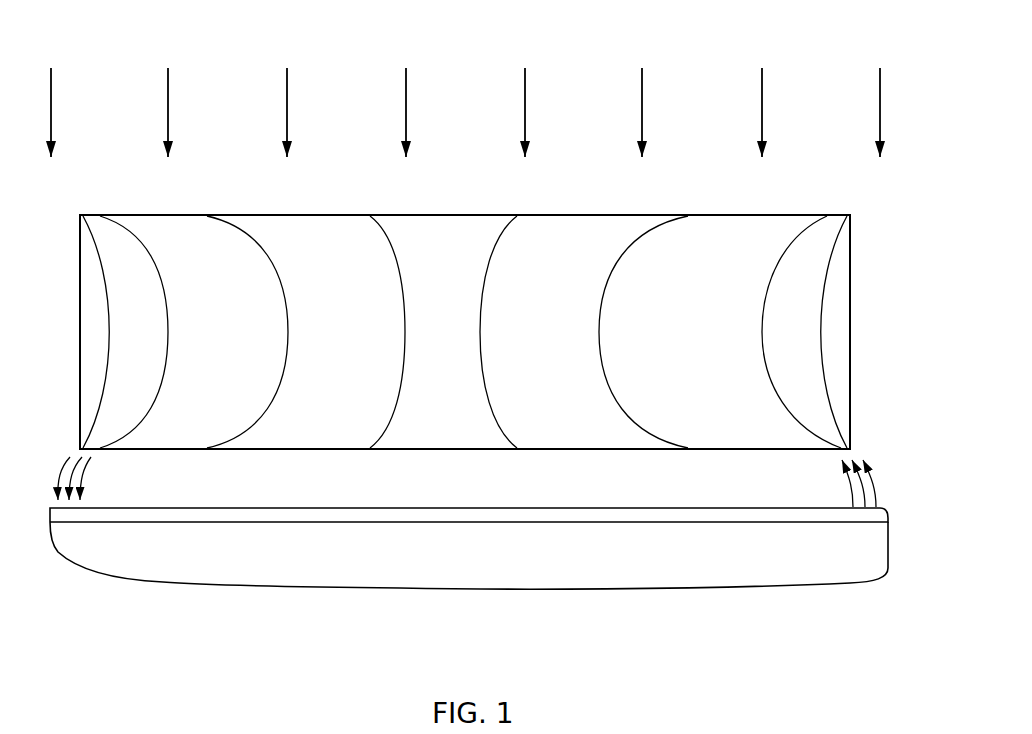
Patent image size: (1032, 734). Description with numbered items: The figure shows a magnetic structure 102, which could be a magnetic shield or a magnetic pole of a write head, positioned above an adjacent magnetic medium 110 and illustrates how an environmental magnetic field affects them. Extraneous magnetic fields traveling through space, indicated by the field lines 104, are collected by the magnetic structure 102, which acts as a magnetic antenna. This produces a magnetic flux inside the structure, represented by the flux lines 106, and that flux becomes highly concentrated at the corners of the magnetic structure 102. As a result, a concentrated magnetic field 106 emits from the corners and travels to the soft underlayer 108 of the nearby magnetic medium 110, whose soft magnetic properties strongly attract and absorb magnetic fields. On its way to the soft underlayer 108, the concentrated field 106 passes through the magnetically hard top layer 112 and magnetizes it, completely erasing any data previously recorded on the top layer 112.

The magnetic structure 102 is at (645, 215).
The field lines 104 is at (525, 92).
The flux lines 106 is at (600, 315).
The soft underlayer 108 is at (390, 553).
The magnetic medium 110 is at (399, 588).
The top layer 112 is at (362, 508).